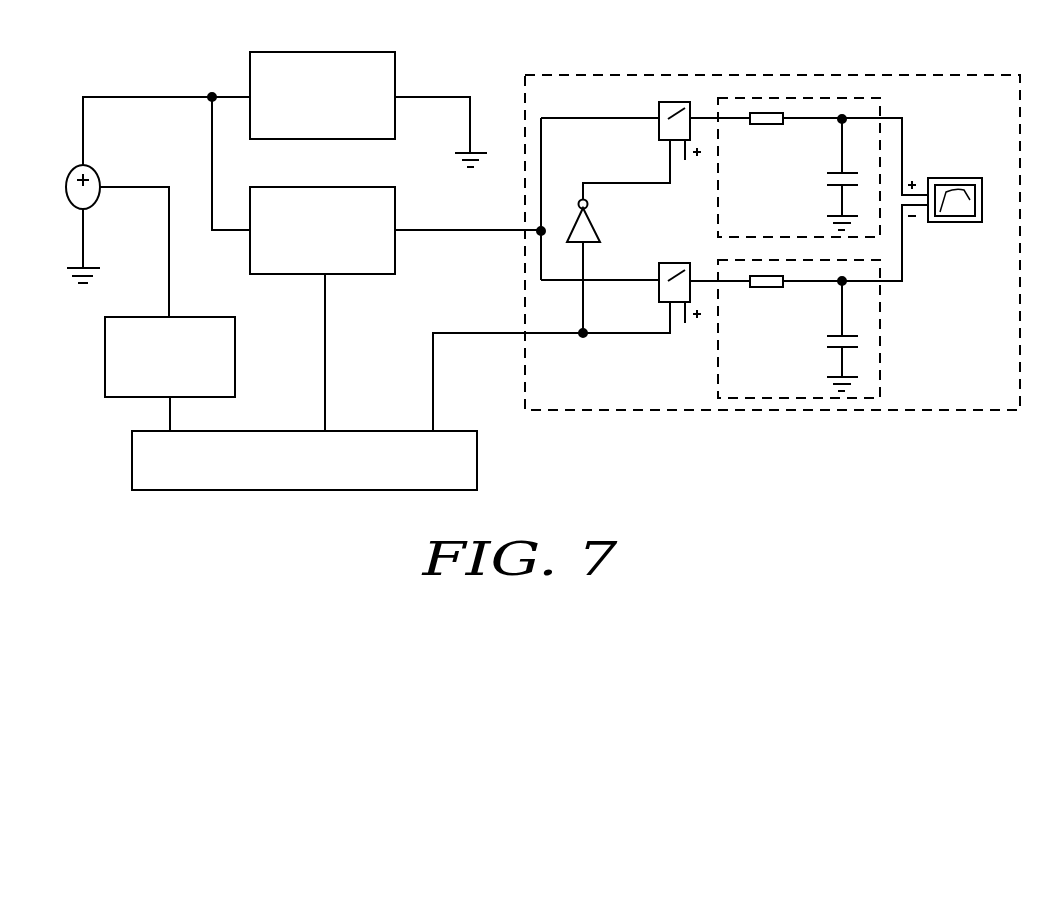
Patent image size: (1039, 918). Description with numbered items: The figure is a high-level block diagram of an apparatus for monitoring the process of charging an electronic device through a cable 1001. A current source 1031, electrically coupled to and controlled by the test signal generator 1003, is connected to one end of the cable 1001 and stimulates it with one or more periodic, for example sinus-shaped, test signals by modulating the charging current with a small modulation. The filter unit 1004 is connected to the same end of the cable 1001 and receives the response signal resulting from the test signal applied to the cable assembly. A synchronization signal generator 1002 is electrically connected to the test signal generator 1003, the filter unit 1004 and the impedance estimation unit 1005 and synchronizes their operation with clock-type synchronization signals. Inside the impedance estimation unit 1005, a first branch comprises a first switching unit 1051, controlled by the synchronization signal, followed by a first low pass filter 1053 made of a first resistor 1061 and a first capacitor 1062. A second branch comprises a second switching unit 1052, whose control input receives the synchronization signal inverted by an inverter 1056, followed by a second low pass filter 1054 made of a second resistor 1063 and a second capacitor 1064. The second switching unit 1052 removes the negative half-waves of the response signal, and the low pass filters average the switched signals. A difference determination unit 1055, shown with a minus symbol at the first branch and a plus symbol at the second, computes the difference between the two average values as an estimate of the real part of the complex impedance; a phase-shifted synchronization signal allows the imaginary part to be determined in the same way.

The cable 1001 is at (318, 52).
The synchronization signal generator 1002 is at (342, 431).
The test signal generator 1003 is at (182, 317).
The filter unit 1004 is at (318, 187).
The impedance estimation unit 1005 is at (605, 75).
The current source 1031 is at (92, 170).
The first switching unit 1051 is at (685, 263).
The second switching unit 1052 is at (682, 102).
The first low pass filter 1053 is at (880, 340).
The second low pass filter 1054 is at (880, 107).
The difference determination unit 1055 is at (933, 222).
The inverter 1056 is at (594, 222).
The first resistor 1061 is at (773, 287).
The first capacitor 1062 is at (816, 340).
The second resistor 1063 is at (773, 125).
The second capacitor 1064 is at (816, 178).